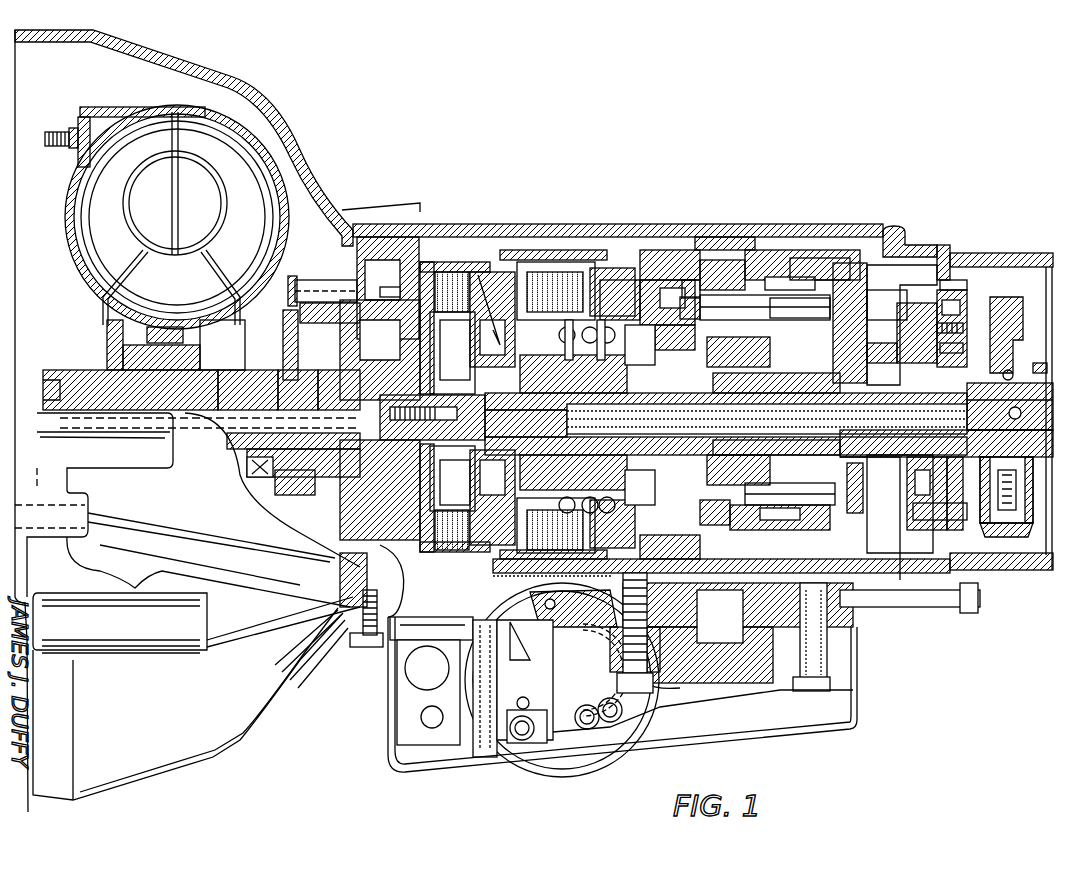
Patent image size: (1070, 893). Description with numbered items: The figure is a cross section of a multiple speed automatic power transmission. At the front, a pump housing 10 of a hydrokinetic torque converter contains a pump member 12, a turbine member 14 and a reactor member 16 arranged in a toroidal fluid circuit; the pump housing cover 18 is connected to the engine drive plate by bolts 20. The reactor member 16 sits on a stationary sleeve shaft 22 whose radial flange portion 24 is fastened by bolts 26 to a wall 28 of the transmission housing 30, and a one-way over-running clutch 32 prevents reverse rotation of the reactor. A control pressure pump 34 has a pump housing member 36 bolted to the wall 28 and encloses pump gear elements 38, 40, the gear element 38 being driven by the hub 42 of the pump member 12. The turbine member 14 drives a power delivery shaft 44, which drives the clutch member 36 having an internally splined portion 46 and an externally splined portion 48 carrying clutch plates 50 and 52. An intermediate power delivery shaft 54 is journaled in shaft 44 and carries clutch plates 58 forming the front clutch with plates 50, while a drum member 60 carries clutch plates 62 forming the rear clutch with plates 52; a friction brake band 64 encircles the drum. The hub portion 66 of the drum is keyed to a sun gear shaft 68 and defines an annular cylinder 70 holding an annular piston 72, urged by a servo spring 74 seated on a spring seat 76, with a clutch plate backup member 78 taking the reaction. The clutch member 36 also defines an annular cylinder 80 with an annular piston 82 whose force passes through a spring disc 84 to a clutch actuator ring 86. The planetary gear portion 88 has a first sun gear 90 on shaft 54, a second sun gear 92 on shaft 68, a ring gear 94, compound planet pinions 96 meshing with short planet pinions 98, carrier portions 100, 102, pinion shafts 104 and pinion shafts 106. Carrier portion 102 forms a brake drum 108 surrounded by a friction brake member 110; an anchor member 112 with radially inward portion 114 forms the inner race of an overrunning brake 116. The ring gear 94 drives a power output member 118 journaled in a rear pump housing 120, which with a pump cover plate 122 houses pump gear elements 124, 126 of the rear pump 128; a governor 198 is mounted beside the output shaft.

The pump housing 10 is at (84, 116).
The pump member 12 is at (187, 183).
The turbine member 14 is at (175, 217).
The reactor member 16 is at (171, 287).
The pump housing cover 18 is at (68, 217).
The bolts 20 is at (60, 131).
The stationary sleeve shaft 22 is at (272, 380).
The radial flange portion 24 is at (352, 352).
The bolts 26 is at (326, 280).
The wall 28 is at (388, 288).
The transmission housing 30 is at (555, 226).
The one-way over-running clutch 32 is at (184, 326).
The control pressure pump 34 is at (315, 497).
The clutch member 36 is at (470, 220).
The pump gear element 38 is at (325, 385).
The pump gear element 40 is at (300, 311).
The hub 42 is at (300, 385).
The power delivery shaft 44 is at (141, 398).
The internally splined portion 46 is at (445, 270).
The externally splined portion 48 is at (640, 278).
The clutch plates 50 is at (435, 275).
The clutch plates 52 is at (648, 270).
The intermediate power delivery shaft 54 is at (726, 424).
The clutch plates 58 is at (480, 270).
The drum member 60 is at (672, 278).
The clutch plates 62 is at (605, 265).
The friction brake band 64 is at (545, 268).
The hub portion 66 is at (740, 325).
The sun gear shaft 68 is at (642, 370).
The annular cylinder 70 is at (690, 280).
The annular piston 72 is at (591, 359).
The servo spring 74 is at (585, 420).
The spring seat 76 is at (573, 422).
The clutch plate backup member 78 is at (565, 250).
The annular cylinder 80 is at (470, 410).
The annular piston 82 is at (455, 424).
The spring disc 84 is at (455, 350).
The clutch actuator ring 86 is at (520, 262).
The planetary gear portion 88 is at (860, 262).
The first sun gear 90 is at (810, 458).
The second sun gear 92 is at (773, 411).
The ring gear 94 is at (800, 258).
The compound planet pinions 96 is at (845, 262).
The short planet pinions 98 is at (760, 515).
The carrier portion 100 is at (867, 315).
The carrier portion 102 is at (760, 260).
The pinion shafts 104 is at (800, 308).
The pinion shafts 106 is at (790, 494).
The brake drum 108 is at (735, 260).
The friction brake member 110 is at (718, 237).
The anchor member 112 is at (705, 260).
The radially inward portion 114 is at (765, 307).
The overrunning brake 116 is at (682, 290).
The power output member 118 is at (1030, 360).
The rear pump housing 120 is at (905, 330).
The pump cover plate 122 is at (955, 292).
The pump gear element 124 is at (965, 292).
The pump gear element 126 is at (963, 350).
The rear pump 128 is at (968, 329).
The governor 198 is at (1037, 490).